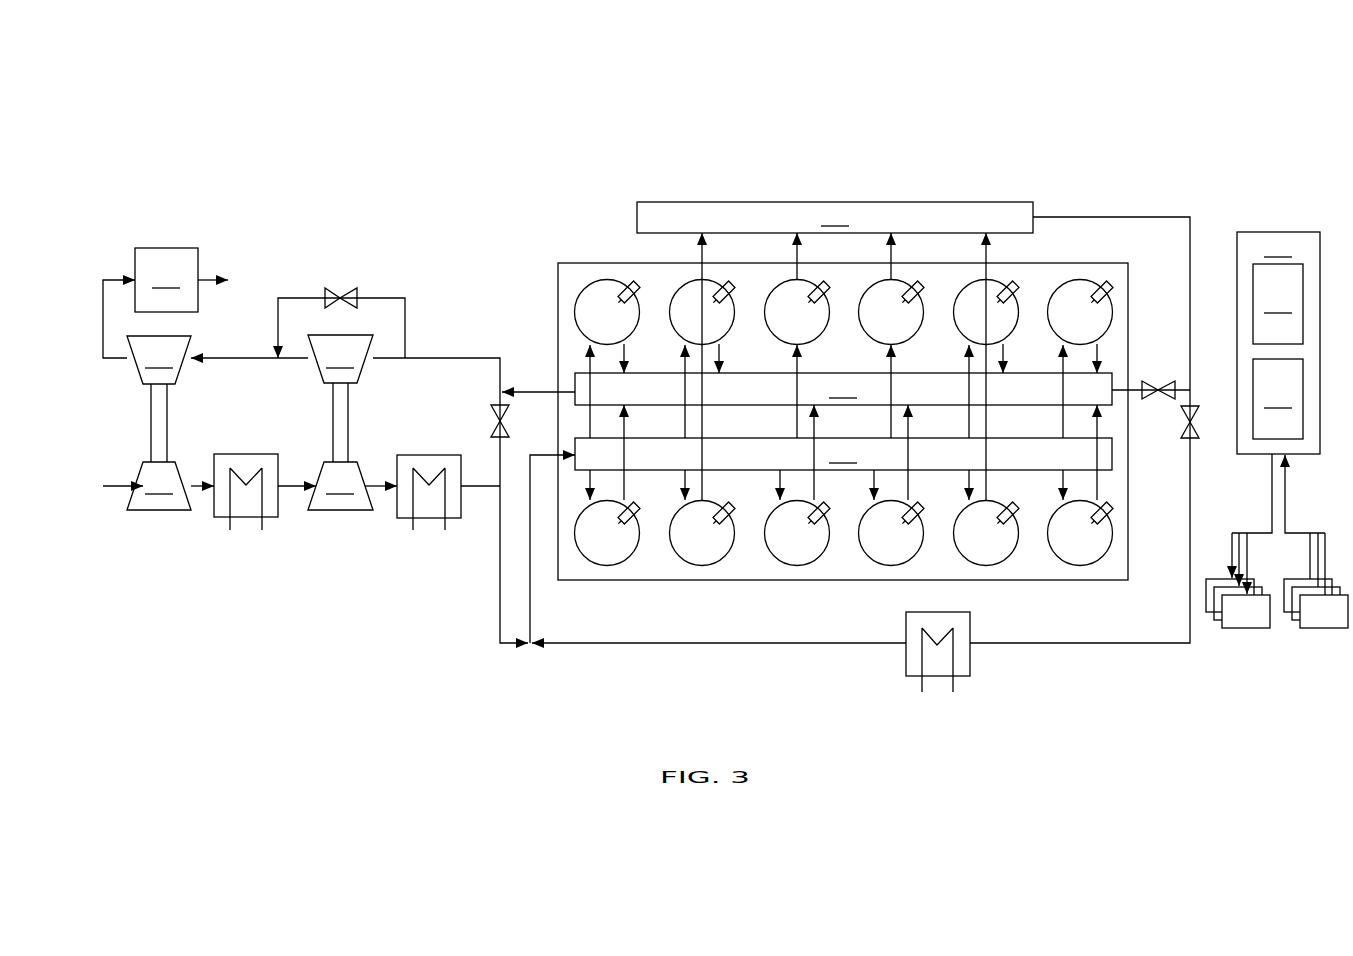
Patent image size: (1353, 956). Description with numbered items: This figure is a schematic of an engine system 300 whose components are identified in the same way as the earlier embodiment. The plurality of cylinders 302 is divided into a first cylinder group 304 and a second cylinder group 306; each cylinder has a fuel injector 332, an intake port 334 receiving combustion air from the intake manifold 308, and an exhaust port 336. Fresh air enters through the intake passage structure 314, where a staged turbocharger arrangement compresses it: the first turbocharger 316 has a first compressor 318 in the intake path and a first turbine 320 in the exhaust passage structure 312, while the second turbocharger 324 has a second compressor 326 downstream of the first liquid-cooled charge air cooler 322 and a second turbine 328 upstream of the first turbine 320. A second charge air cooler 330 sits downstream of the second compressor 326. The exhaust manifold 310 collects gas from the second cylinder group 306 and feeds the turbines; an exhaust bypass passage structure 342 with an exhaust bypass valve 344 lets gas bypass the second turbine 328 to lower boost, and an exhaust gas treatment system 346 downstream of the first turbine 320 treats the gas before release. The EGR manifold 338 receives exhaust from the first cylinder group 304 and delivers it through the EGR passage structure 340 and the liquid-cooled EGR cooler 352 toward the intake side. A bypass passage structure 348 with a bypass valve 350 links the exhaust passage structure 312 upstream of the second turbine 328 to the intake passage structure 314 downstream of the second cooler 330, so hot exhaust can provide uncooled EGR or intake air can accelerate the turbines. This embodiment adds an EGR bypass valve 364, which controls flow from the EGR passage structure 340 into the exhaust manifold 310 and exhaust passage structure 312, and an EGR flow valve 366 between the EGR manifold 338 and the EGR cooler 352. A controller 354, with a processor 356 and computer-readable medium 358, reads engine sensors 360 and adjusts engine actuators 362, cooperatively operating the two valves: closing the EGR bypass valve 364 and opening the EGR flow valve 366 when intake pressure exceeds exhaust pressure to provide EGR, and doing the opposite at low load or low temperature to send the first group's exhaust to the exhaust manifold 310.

The engine system 300 is at (1229, 103).
The plurality of cylinders 302 is at (560, 237).
The first cylinder group 304 is at (820, 335).
The second cylinder group 306 is at (806, 492).
The intake manifold 308 is at (843, 454).
The exhaust manifold 310 is at (843, 389).
The exhaust passage structure 312 is at (213, 277).
The intake passage structure 314 is at (110, 488).
The first turbocharger 316 is at (128, 398).
The first compressor 318 is at (159, 486).
The first turbine 320 is at (159, 360).
The first liquid-cooled charge air cooler 322 is at (243, 454).
The second turbocharger 324 is at (320, 398).
The second compressor 326 is at (340, 486).
The second turbine 328 is at (282, 359).
The second liquid-cooled charge air cooler 330 is at (430, 454).
The fuel injector 332 is at (828, 290).
The intake port 334 is at (779, 490).
The exhaust port 336 is at (816, 495).
The EGR manifold 338 is at (835, 217).
The EGR passage structure 340 is at (1155, 216).
The exhaust bypass passage structure 342 is at (386, 297).
The exhaust bypass valve 344 is at (333, 287).
The exhaust gas treatment system 346 is at (150, 303).
The bypass passage structure 348 is at (503, 458).
The bypass valve 350 is at (506, 430).
The EGR cooler 352 is at (975, 633).
The controller 354 is at (1278, 382).
The processor 356 is at (1278, 304).
The computer-readable medium 358 is at (1278, 399).
The engine sensors 360 is at (1316, 580).
The engine actuators 362 is at (1238, 580).
The EGR bypass valve 364 is at (1143, 383).
The EGR flow valve 366 is at (1184, 430).